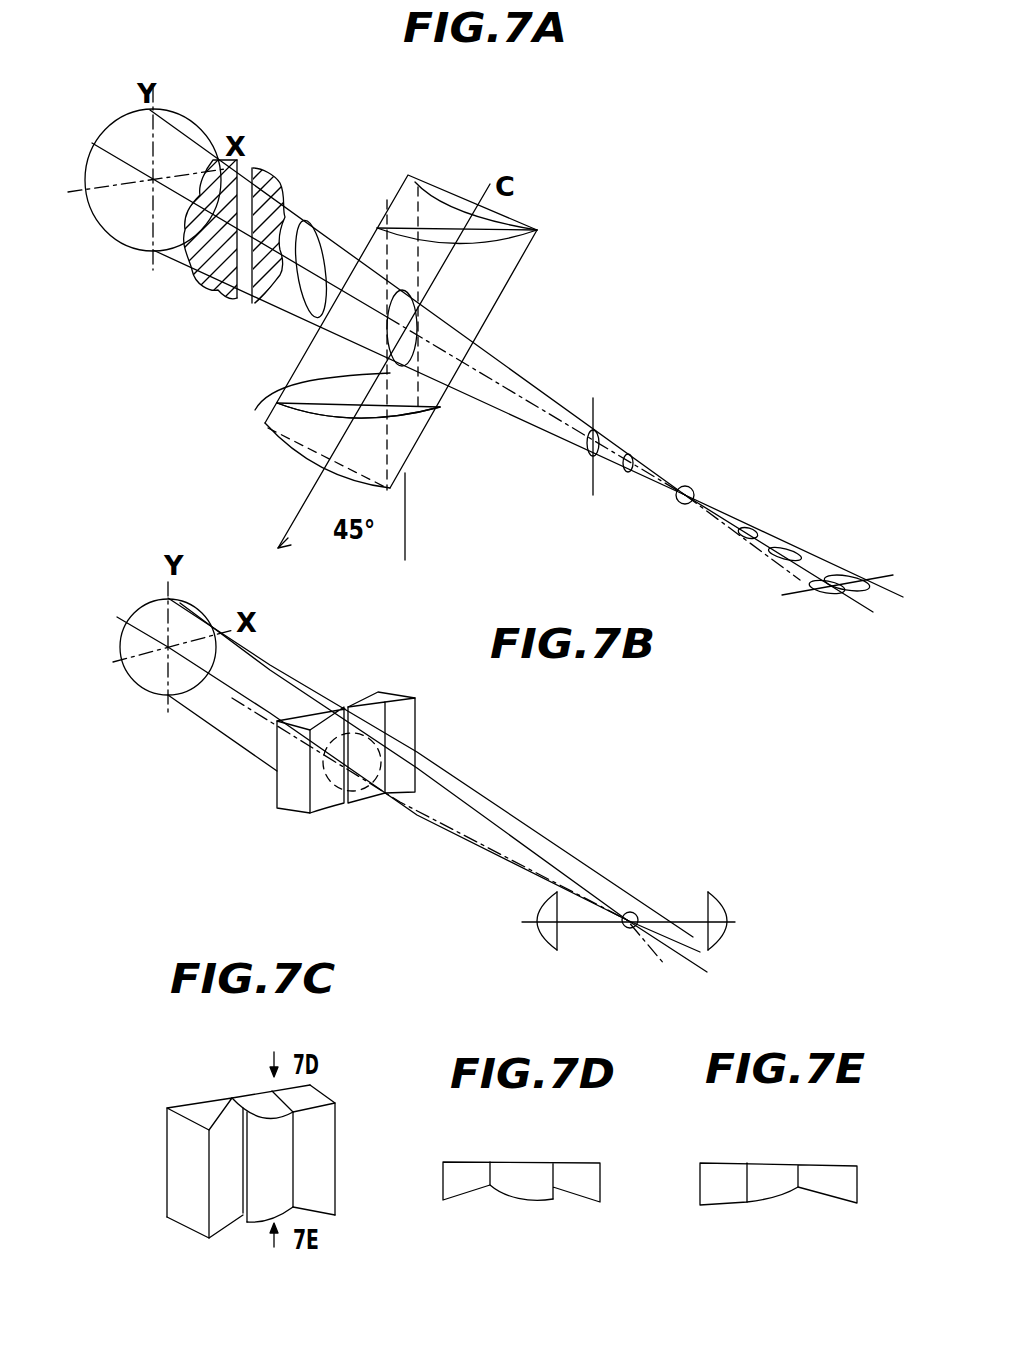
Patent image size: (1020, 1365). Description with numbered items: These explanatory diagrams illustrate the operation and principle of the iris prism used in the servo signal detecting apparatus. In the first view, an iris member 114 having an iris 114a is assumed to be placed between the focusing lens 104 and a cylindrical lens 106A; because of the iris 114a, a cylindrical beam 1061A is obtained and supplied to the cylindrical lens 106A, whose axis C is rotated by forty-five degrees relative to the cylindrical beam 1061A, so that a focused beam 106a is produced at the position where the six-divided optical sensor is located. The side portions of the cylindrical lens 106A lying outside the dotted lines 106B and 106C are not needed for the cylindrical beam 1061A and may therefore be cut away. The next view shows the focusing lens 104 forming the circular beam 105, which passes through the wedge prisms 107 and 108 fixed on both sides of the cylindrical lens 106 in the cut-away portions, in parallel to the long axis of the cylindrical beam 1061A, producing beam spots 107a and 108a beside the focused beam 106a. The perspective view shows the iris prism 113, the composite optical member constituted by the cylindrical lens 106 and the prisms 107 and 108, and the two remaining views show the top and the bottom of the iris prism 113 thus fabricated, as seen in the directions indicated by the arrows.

In FIG. 7A, the focusing lens 104 is at (110, 126).
In FIG. 7B, the focusing lens 104 is at (138, 683).
In FIG. 7A, the iris 114a is at (240, 158).
In FIG. 7A, the iris member 114 is at (280, 182).
In FIG. 7A, the cylindrical lens 106A is at (457, 190).
In FIG. 7A, the cylindrical beam 1061A is at (307, 288).
In FIG. 7A, the dotted line 106C is at (413, 275).
In FIG. 7A, the dotted line 106B is at (292, 406).
In FIG. 7A, the focused beam 106a is at (685, 488).
In FIG. 7B, the focused beam 106a is at (630, 930).
In FIG. 7B, the circular beam 105 is at (332, 728).
In FIG. 7B, the prism 108 is at (403, 720).
In FIG. 7C, the prism 108 is at (318, 1148).
In FIG. 7B, the prism 107 is at (325, 800).
In FIG. 7C, the prism 107 is at (180, 1190).
In FIG. 7B, the beam spot 107a is at (545, 943).
In FIG. 7B, the beam spot 108a is at (720, 897).
In FIG. 7C, the iris prism 113 is at (235, 1166).
In FIG. 7D, the iris prism 113 is at (508, 1160).
In FIG. 7E, the iris prism 113 is at (777, 1197).
In FIG. 7C, the cylindrical lens 106 is at (260, 1212).